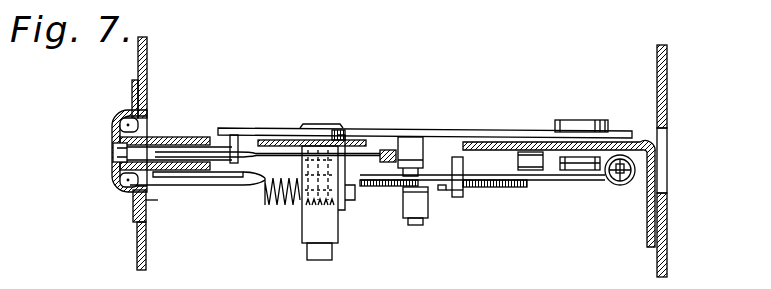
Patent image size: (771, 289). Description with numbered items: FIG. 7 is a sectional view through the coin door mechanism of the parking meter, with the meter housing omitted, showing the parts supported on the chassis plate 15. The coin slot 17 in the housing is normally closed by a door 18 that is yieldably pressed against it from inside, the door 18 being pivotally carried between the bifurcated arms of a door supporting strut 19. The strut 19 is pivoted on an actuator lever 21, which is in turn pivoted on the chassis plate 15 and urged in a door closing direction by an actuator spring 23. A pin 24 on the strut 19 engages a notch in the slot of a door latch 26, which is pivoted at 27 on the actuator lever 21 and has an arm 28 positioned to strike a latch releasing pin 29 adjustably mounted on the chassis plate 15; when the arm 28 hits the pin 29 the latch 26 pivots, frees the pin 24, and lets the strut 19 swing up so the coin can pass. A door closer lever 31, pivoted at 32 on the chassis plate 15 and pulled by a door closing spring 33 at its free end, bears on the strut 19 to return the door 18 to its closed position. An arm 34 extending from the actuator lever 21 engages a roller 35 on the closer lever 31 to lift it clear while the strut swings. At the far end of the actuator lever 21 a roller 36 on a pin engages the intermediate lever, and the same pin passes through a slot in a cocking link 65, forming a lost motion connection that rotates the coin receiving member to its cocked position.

The chassis plate 15 is at (278, 140).
The coin slot 17 is at (108, 158).
The door 18 is at (112, 152).
The door supporting strut 19 is at (245, 176).
The actuator lever 21 is at (357, 172).
The actuator spring 23 is at (268, 207).
The pin 24 is at (442, 192).
The door latch 26 is at (514, 186).
The pivot 27 is at (408, 206).
The arm 28 is at (480, 186).
The latch releasing pin 29 is at (460, 197).
The door closer lever 31 is at (360, 128).
The pivot 32 is at (530, 152).
The door closing spring 33 is at (618, 187).
The arm 34 is at (386, 150).
The roller 35 is at (410, 142).
The roller 36 is at (587, 125).
The cocking link 65 is at (584, 166).